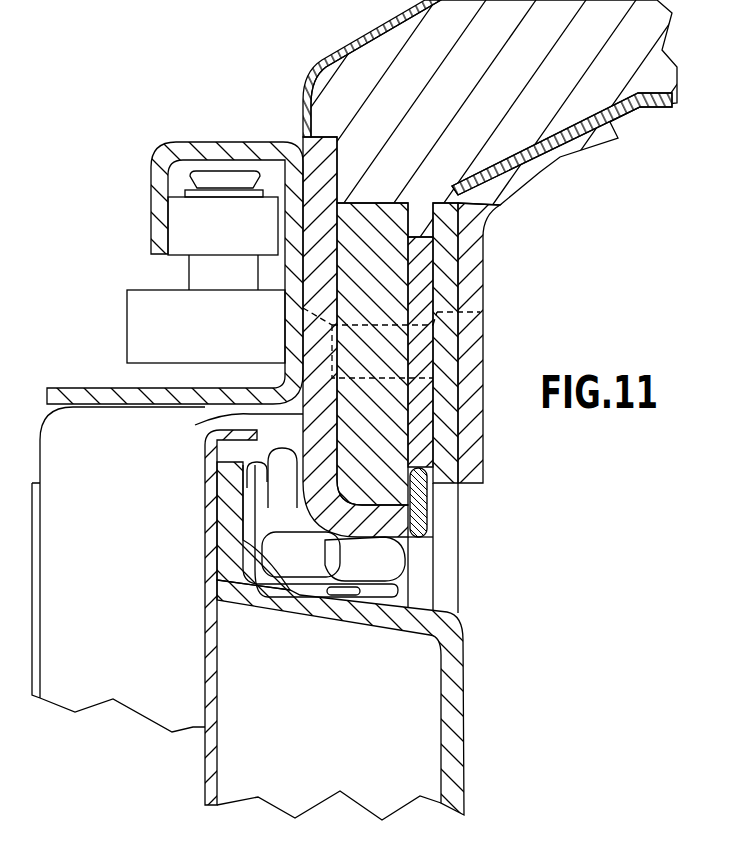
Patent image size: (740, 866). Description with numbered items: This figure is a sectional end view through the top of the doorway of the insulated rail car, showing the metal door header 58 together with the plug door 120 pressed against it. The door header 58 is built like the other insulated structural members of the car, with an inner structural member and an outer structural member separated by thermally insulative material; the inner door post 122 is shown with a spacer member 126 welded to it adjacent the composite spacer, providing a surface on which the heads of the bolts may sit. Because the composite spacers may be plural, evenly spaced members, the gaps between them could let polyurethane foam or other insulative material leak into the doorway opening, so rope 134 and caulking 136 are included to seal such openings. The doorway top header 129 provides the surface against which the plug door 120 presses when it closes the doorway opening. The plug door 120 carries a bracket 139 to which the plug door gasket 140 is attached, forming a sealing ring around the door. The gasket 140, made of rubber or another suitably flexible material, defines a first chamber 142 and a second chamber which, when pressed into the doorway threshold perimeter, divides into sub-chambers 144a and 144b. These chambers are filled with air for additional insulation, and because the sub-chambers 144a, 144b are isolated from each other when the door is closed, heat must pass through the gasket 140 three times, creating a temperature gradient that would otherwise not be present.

The door header 58 is at (301, 138).
The plug door 120 is at (358, 747).
The inner door post 122 is at (447, 264).
The spacer member 126 is at (420, 237).
The doorway top header 129 is at (217, 425).
The rope 134 is at (433, 524).
The caulking 136 is at (458, 486).
The bracket 139 is at (238, 548).
The plug door gasket 140 is at (260, 592).
The first chamber 142 is at (303, 560).
The sub-chamber 144a is at (378, 557).
The sub-chamber 144b is at (297, 504).